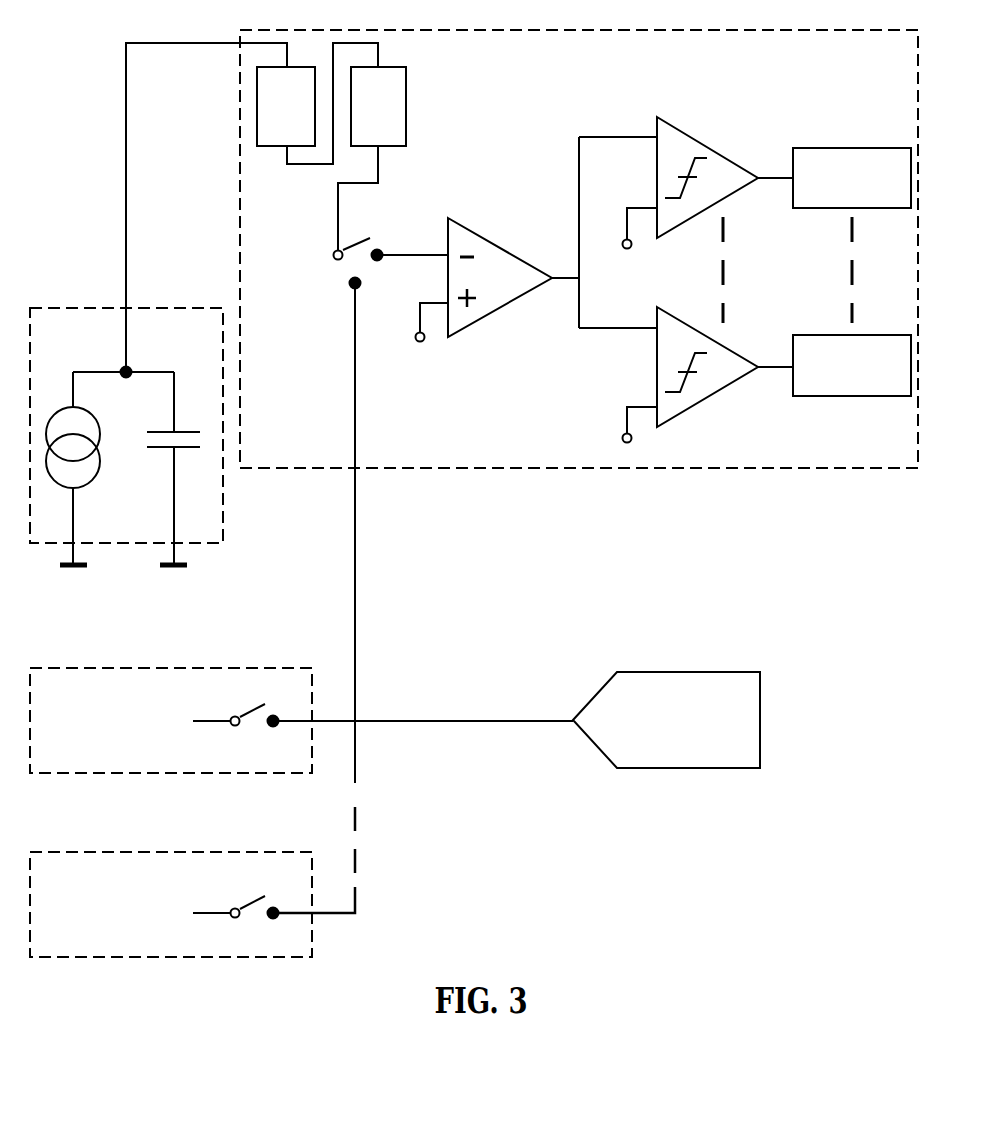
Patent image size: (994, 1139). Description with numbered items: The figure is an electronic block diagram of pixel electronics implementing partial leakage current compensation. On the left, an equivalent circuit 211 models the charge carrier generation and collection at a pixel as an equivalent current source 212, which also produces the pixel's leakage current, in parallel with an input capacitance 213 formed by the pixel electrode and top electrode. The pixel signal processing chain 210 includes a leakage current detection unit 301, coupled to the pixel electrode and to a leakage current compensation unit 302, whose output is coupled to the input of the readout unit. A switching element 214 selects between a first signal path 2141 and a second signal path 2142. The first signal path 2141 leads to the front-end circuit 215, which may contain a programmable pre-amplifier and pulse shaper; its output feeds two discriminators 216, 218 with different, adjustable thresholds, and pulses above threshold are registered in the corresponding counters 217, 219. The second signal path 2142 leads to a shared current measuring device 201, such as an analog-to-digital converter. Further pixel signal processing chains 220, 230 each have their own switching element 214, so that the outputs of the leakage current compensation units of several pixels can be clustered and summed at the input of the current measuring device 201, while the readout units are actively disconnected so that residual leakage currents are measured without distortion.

The current measuring device 201 is at (682, 672).
The pixel signal processing chain 210 is at (468, 470).
The equivalent circuit 211 is at (41, 307).
The equivalent current source 212 is at (97, 457).
The input capacitance 213 is at (183, 447).
The switching element 214 is at (363, 236).
The first signal path 2141 is at (390, 258).
The second signal path 2142 is at (355, 348).
The front-end circuit 215 is at (497, 310).
The discriminator 216 is at (725, 155).
The counter 217 is at (842, 148).
The discriminator 218 is at (713, 395).
The counter 219 is at (855, 396).
The pixel signal processing chain 220 is at (213, 668).
The pixel signal processing chain 230 is at (213, 852).
The leakage current detection unit 301 is at (257, 105).
The leakage current compensation unit 302 is at (407, 105).